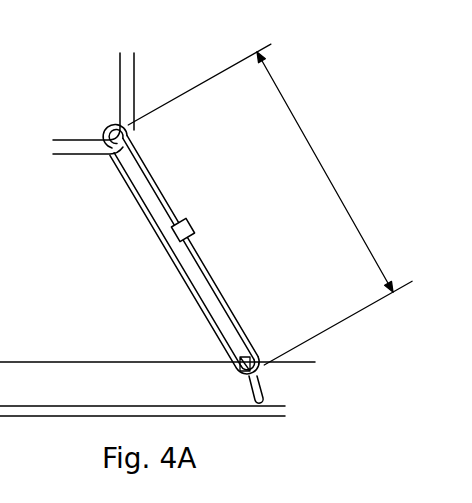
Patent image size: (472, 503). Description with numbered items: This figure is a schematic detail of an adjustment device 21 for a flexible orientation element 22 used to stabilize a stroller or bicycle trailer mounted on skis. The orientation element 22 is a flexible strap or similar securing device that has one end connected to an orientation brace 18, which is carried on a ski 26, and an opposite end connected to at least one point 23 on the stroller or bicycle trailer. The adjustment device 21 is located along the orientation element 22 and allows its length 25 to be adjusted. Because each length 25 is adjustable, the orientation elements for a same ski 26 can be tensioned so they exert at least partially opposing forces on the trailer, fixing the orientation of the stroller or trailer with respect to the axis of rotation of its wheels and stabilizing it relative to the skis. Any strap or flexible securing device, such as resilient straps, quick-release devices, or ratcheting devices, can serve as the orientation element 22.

The orientation brace 18 is at (262, 378).
The adjustment device 21 is at (190, 225).
The orientation element 22 is at (155, 180).
The connection point 23 is at (135, 124).
The length of orientation element 25 is at (312, 148).
The ski 26 is at (64, 380).